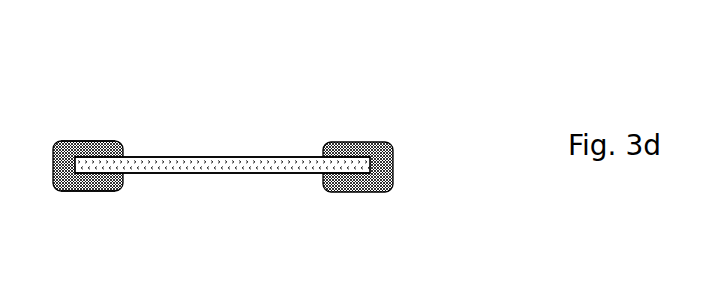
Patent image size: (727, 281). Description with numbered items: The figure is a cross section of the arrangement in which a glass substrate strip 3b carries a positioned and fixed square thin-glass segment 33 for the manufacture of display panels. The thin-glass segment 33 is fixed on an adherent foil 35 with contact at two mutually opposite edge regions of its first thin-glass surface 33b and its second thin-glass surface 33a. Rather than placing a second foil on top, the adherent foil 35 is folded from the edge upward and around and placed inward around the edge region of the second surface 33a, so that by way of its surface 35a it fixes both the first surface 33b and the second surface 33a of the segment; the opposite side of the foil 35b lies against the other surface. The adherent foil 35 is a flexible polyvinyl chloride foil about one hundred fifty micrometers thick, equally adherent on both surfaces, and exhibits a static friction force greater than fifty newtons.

The glass substrate strip 3b is at (157, 113).
The thin-glass segment 33 is at (260, 165).
The second thin-glass surface 33a is at (170, 157).
The first thin-glass surface 33b is at (157, 173).
The adherent foil 35 is at (392, 152).
The surface of the adherent foil 35a is at (88, 157).
The second side of pad 35b is at (75, 191).